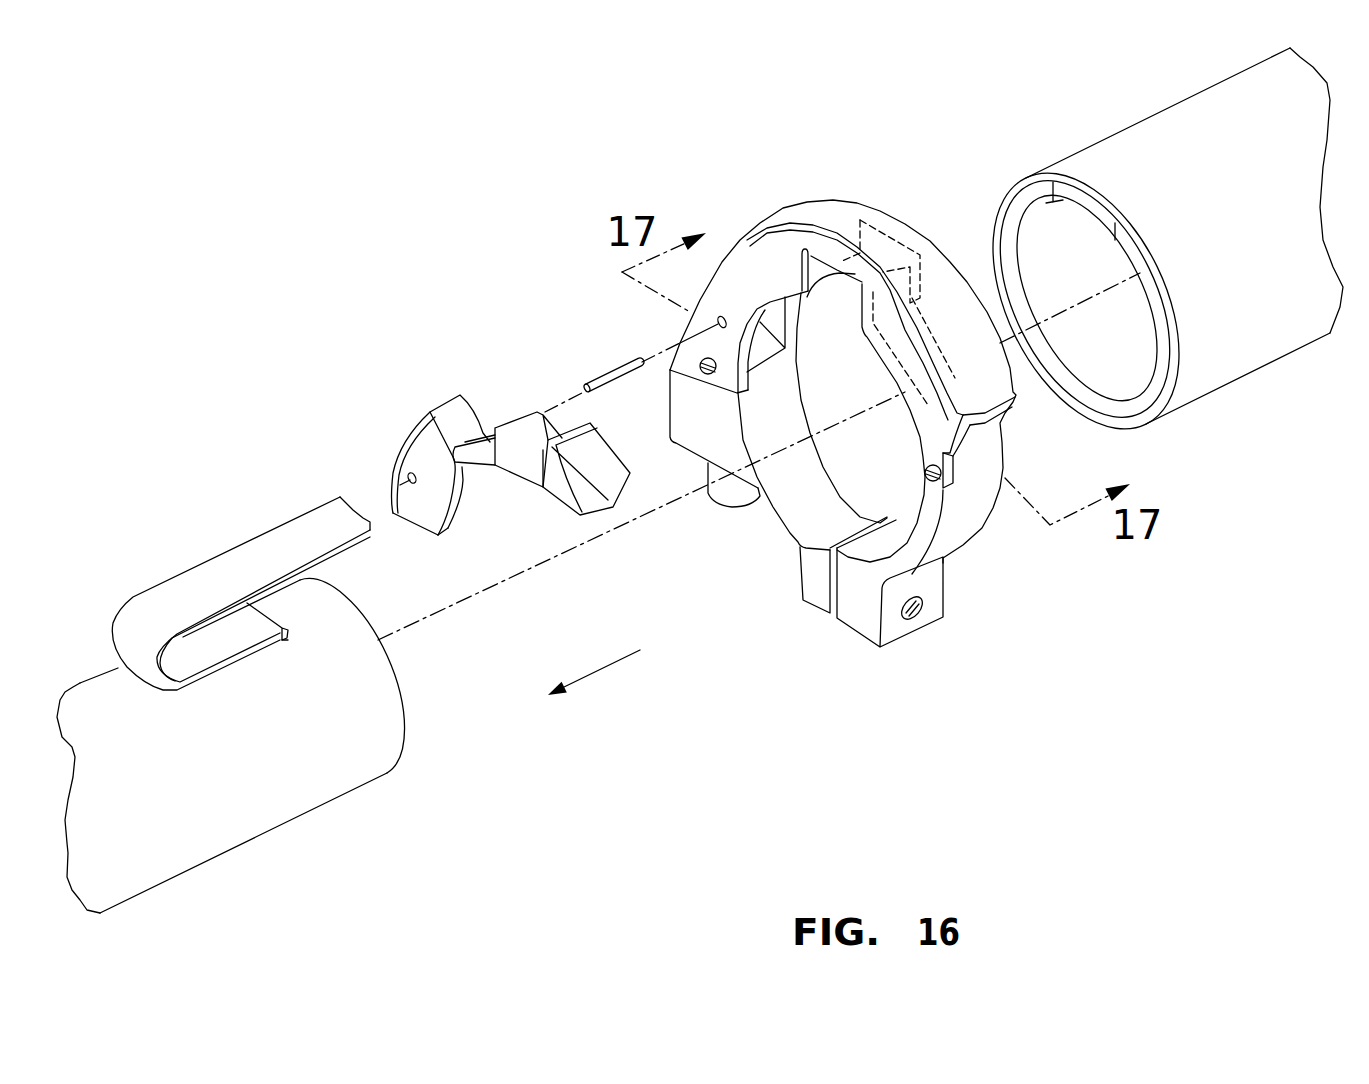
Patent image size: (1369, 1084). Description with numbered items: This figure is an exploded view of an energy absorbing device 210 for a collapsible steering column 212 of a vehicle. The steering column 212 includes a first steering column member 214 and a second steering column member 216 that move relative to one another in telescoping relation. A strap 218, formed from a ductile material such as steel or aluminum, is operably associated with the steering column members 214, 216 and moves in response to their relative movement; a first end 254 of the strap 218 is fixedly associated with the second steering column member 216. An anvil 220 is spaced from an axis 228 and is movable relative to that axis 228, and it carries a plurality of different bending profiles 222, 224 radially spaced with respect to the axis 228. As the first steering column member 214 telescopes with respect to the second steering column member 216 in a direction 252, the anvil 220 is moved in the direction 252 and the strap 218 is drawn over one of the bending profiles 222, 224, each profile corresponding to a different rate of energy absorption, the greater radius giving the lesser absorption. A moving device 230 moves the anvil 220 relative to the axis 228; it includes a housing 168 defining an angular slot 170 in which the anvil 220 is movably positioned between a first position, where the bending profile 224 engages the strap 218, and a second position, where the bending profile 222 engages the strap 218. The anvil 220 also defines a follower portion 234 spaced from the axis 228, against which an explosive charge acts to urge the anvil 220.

The housing 168 is at (933, 600).
The angular slot 170 is at (810, 254).
The energy absorbing device 210 is at (494, 270).
The collapsible steering column 212 is at (1080, 684).
The first steering column member 214 is at (1258, 353).
The second steering column member 216 is at (382, 742).
The strap 218 is at (282, 545).
The anvil 220 is at (356, 392).
The bending profile 222 is at (457, 398).
The bending profile 224 is at (520, 415).
The axis 228 is at (634, 530).
The moving device 230 is at (800, 657).
The follower portion 234 is at (440, 525).
The direction 252 is at (630, 655).
The first end 254 is at (288, 640).